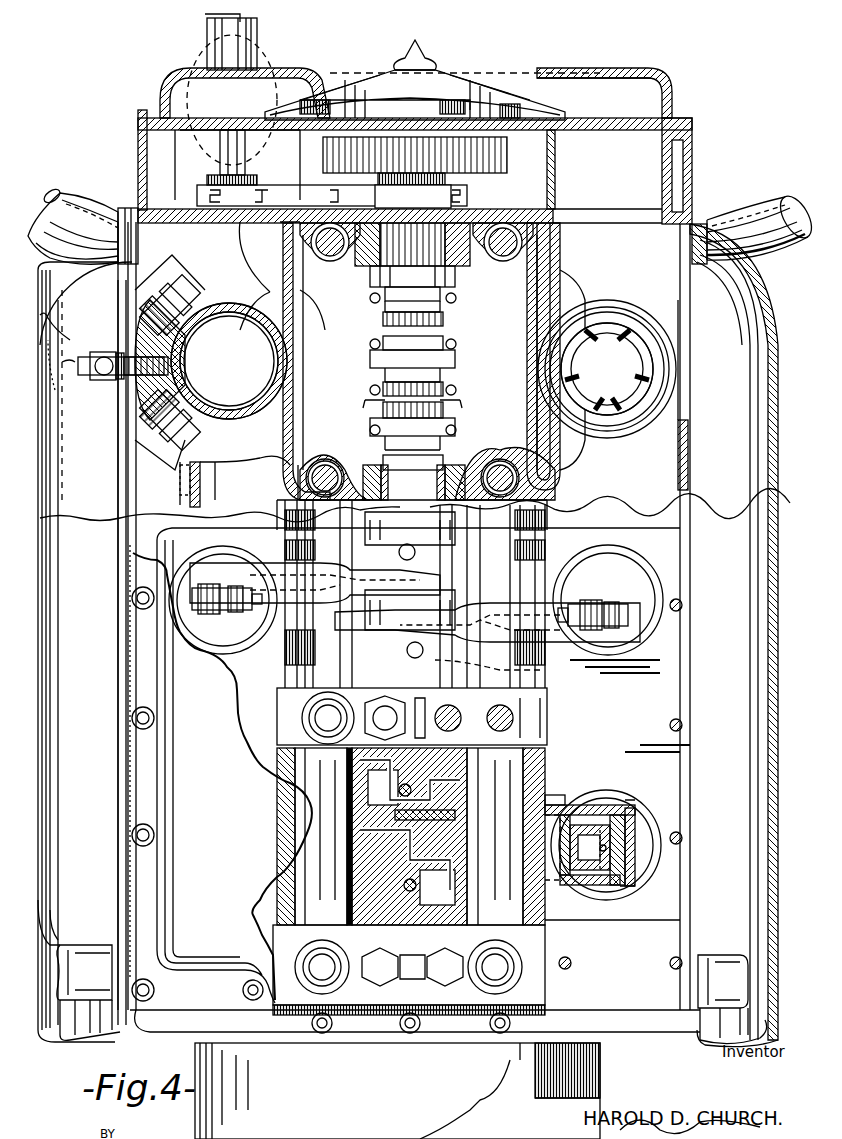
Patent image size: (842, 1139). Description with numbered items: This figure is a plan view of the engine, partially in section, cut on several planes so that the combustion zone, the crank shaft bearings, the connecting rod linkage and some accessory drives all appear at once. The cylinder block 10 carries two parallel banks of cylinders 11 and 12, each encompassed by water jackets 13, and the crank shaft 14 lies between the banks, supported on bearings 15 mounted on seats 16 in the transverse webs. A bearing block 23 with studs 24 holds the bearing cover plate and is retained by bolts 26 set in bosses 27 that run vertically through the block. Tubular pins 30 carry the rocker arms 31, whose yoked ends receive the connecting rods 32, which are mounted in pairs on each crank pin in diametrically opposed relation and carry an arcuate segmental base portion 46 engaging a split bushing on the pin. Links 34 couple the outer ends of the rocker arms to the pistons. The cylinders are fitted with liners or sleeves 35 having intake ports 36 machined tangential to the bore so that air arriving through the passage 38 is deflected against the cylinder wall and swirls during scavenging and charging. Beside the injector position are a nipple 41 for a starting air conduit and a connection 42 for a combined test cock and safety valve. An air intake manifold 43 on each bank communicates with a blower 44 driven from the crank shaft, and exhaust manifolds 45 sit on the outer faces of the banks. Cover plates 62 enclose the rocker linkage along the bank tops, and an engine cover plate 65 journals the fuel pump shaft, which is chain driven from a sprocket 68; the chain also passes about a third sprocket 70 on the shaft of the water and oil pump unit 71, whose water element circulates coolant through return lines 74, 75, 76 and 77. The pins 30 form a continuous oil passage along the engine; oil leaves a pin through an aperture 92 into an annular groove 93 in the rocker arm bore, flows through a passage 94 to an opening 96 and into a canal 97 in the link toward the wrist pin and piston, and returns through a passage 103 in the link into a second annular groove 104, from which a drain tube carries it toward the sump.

The cylinder block 10 is at (692, 205).
The cylinders 11 is at (229, 361).
The cylinders 12 is at (607, 369).
The water jackets 13 is at (300, 310).
The crank shaft 14 is at (452, 363).
The bearings 15 is at (458, 470).
The seats 16 is at (355, 468).
The bearing block 23 is at (290, 695).
The studs 24 is at (390, 968).
The bolts 26 is at (330, 250).
The bosses 27 is at (535, 240).
The pins 30 is at (322, 790).
The rocker arms 31 is at (500, 565).
The connecting rods 32 is at (382, 318).
The links 34 is at (195, 580).
The liners or sleeves 35 is at (248, 318).
The intake ports 36 is at (640, 330).
The passage 38 is at (690, 372).
The nipple 41 is at (135, 300).
The connection 42 is at (168, 445).
The air intake manifold 43 is at (408, 635).
The blower 44 is at (445, 100).
The exhaust manifolds 45 is at (401, 635).
The arcuate segmental base portion 46 is at (98, 372).
The cover plates 62 is at (407, 777).
The engine cover plate 65 is at (162, 95).
The sprocket 68 is at (465, 199).
The third sprocket 70 is at (200, 190).
The water and oil pump unit 71 is at (212, 48).
The return line 74 is at (80, 228).
The return line 75 is at (748, 230).
The return line 76 is at (745, 972).
The return line 77 is at (78, 965).
The aperture 92 is at (545, 913).
The annular groove 93 is at (580, 800).
The passage 94 is at (620, 885).
The opening 96 is at (640, 865).
The canal 97 is at (618, 810).
The passage 103 is at (615, 850).
The annular groove 104 is at (548, 805).